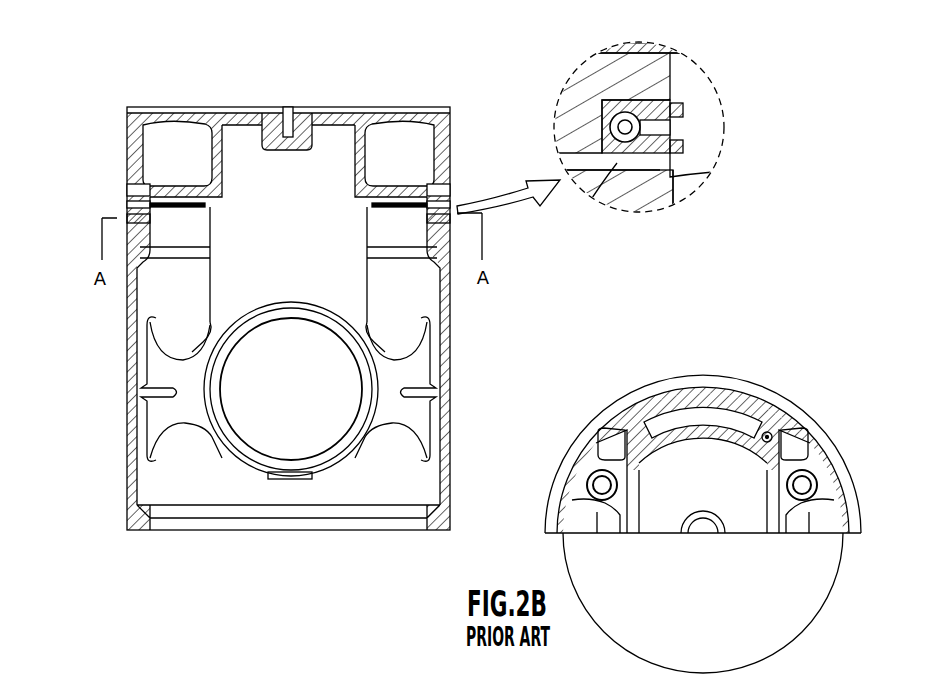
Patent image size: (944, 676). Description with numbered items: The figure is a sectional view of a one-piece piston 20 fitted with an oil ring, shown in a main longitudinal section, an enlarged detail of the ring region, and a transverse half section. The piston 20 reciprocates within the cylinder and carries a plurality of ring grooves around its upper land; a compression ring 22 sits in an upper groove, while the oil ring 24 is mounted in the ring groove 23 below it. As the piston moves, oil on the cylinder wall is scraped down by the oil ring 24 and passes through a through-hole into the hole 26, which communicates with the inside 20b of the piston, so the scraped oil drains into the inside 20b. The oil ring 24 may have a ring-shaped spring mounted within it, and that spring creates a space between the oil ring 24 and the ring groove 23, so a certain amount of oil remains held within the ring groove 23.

The piston 20 is at (383, 386).
The inside of the piston 20b is at (273, 262).
The compression ring 22 is at (128, 199).
The ring groove 23 is at (593, 98).
The oil ring 24 is at (127, 217).
The hole 26 is at (153, 222).